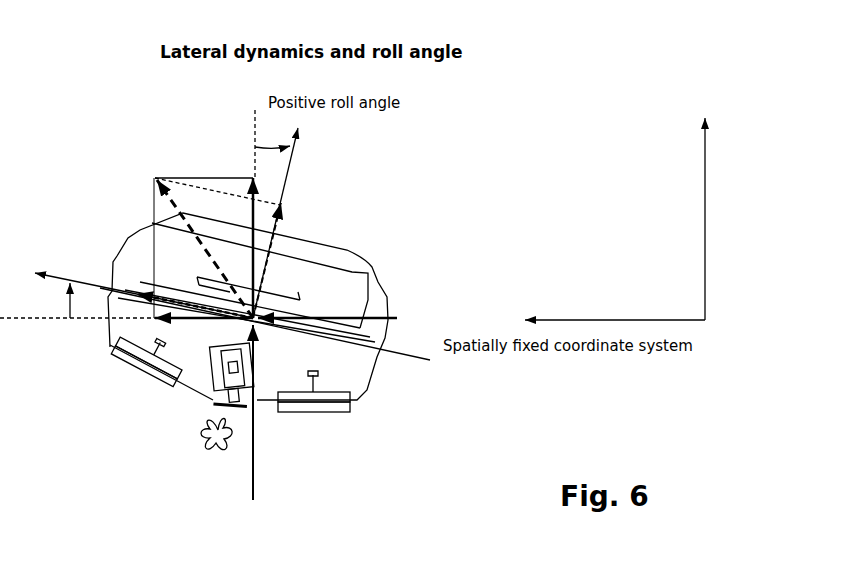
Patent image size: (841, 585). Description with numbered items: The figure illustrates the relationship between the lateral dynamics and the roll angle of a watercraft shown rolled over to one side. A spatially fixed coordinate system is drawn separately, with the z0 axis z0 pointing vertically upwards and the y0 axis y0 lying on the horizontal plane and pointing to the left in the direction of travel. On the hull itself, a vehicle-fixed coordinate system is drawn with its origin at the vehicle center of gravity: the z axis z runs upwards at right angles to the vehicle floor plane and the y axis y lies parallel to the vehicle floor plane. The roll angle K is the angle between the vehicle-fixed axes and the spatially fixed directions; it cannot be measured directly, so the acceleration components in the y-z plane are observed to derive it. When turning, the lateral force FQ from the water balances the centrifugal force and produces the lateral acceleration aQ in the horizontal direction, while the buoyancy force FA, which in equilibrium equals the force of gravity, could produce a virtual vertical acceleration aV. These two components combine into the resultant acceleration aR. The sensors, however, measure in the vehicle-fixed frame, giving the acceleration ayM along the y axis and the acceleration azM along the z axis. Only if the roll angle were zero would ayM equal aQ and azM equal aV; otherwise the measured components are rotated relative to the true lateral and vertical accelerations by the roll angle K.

The resultant acceleration aR is at (132, 126).
The vertical acceleration aV is at (230, 232).
The measured acceleration along z axis azM is at (294, 260).
The measured acceleration along y axis ayM is at (159, 277).
The lateral acceleration aQ is at (184, 331).
The lateral force FQ is at (340, 319).
The buoyancy force FA is at (248, 431).
The vehicle-fixed z axis z is at (283, 222).
The vehicle-fixed y axis y is at (136, 292).
The roll angle K is at (168, 222).
The spatially fixed z0 axis z0 is at (718, 218).
The spatially fixed y0 axis y0 is at (615, 306).